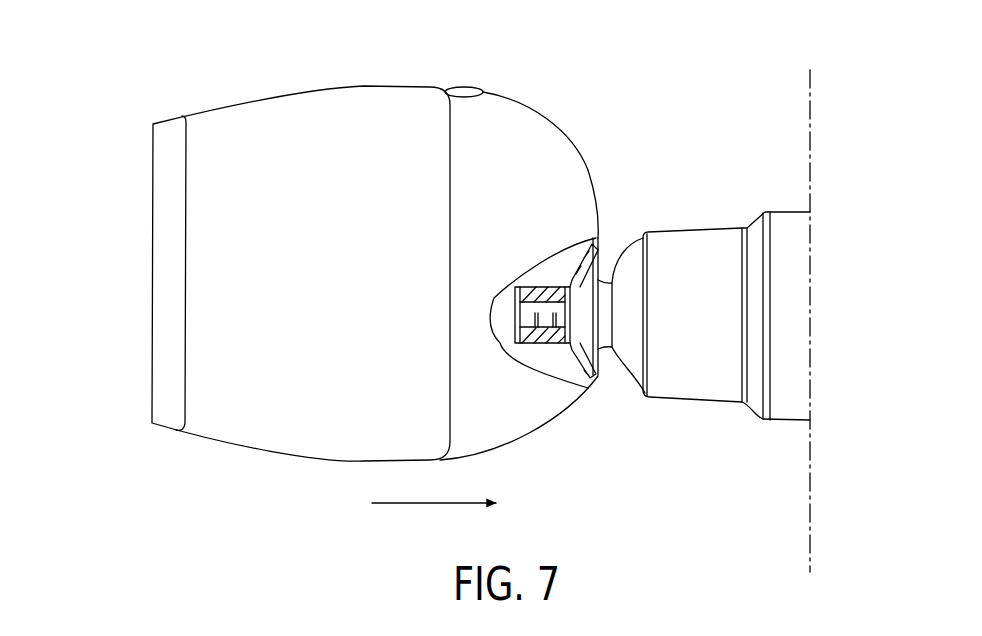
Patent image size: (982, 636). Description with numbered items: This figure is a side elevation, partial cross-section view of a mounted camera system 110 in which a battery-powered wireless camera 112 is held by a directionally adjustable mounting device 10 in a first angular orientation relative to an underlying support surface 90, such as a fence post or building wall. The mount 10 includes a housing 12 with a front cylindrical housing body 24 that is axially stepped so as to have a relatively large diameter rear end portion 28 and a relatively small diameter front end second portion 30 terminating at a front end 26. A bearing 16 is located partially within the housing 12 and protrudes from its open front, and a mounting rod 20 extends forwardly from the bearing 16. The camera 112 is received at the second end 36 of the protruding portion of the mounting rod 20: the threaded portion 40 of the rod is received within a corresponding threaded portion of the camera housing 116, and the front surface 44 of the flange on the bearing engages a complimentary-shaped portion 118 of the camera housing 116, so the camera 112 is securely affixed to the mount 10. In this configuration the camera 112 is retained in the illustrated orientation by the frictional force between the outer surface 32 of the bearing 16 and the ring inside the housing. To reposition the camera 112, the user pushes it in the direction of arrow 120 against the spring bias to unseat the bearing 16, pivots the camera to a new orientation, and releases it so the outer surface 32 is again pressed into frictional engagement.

The mounting device 10 is at (741, 331).
The housing 12 is at (759, 314).
The bearing 16 is at (617, 255).
The mounting rod 20 is at (532, 307).
The housing body 24 is at (692, 229).
The front end 26 is at (640, 390).
The rear end portion 28 is at (790, 305).
The front end second portion 30 is at (693, 387).
The outer surface 32 is at (620, 350).
The second end 36 is at (515, 317).
The threaded portion 40 is at (523, 286).
The front surface 44 is at (583, 263).
The support surface 90 is at (810, 133).
The mounted camera system 110 is at (126, 88).
The camera 112 is at (231, 98).
The camera housing 116 is at (299, 93).
The complimentary-shaped portion 118 is at (578, 237).
The arrow 120 is at (428, 505).